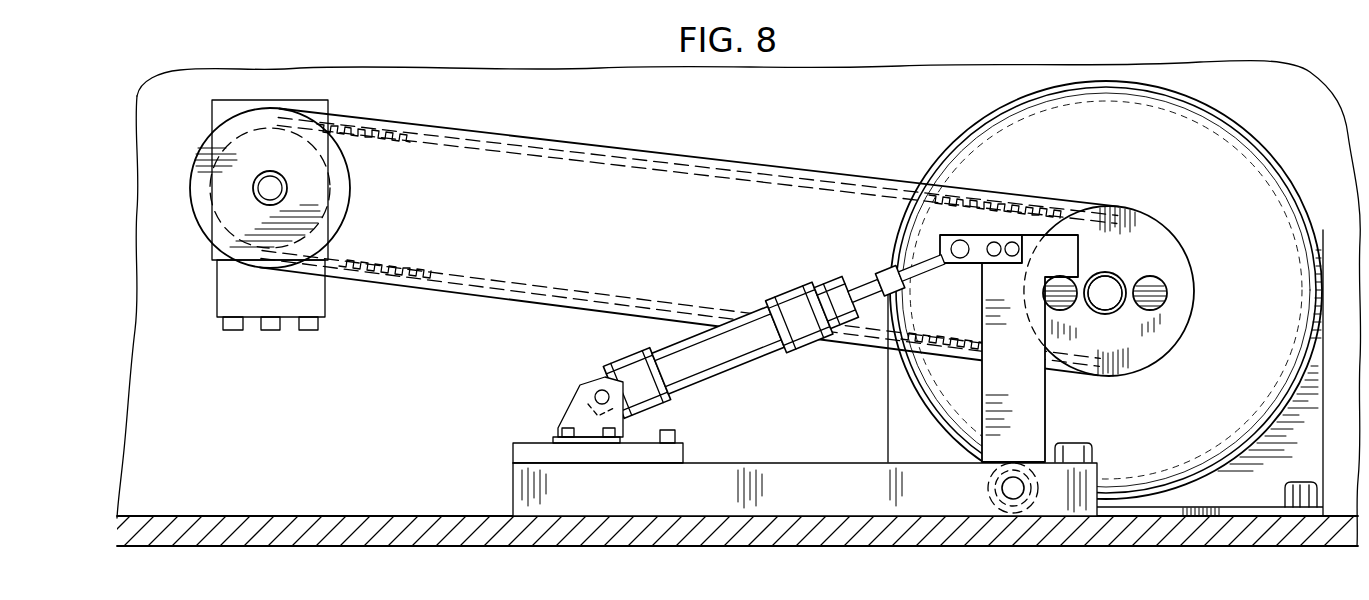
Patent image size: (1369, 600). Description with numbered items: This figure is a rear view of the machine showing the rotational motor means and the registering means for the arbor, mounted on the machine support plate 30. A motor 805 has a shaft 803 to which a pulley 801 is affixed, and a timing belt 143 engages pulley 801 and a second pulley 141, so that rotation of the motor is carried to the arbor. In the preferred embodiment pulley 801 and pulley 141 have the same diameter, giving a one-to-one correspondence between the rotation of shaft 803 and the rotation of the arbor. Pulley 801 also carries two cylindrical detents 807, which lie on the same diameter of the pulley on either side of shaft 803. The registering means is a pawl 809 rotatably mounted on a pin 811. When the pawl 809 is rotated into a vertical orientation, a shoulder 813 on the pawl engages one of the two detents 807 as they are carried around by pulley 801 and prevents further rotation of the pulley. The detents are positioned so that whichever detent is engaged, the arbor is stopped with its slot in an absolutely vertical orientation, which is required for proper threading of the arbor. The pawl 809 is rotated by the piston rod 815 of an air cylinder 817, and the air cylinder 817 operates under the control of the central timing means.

The machine support plate 30 is at (397, 396).
The pulley 141 is at (317, 193).
The timing belt 143 is at (604, 152).
The pulley 801 is at (1166, 333).
The shaft 803 is at (1102, 301).
The motor 805 is at (1219, 227).
The cylindrical detents 807 is at (1083, 279).
The pawl 809 is at (1053, 243).
The pin 811 is at (1013, 500).
The shoulder 813 is at (1078, 238).
The piston rod 815 is at (865, 285).
The air cylinder 817 is at (740, 342).